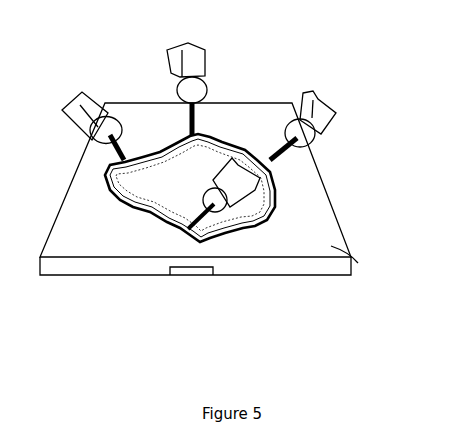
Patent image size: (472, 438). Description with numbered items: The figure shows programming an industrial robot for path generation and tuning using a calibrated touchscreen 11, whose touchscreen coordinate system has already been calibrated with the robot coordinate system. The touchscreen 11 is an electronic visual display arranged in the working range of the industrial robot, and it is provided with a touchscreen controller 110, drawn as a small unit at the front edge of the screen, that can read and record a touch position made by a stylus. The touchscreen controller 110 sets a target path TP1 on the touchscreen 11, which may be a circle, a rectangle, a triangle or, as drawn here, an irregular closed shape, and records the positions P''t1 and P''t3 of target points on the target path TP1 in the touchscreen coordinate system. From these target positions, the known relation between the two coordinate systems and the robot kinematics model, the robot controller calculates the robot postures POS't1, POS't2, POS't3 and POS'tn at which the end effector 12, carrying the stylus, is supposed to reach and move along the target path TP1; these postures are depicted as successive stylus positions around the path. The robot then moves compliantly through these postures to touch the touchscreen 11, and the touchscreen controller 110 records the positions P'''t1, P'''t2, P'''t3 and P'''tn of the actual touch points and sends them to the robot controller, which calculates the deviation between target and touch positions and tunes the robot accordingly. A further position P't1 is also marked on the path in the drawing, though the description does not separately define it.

The touchscreen 11 is at (358, 263).
The end effector 12 is at (198, 118).
The touchscreen controller 110 is at (175, 277).
The target path TP1 is at (118, 201).
The industrial robot posture POS't1 is at (77, 115).
The industrial robot posture POS't2 is at (199, 80).
The industrial robot posture POS't3 is at (313, 115).
The industrial robot posture POS'tn is at (259, 198).
The contact point at time t1 P't1 is at (154, 184).
The position of target point P''t1 is at (148, 241).
The position of touch point P'''t1 is at (95, 187).
The position of touch point P'''t2 is at (162, 121).
The position of touch point P'''t3 is at (249, 176).
The position of target point P''t3 is at (290, 201).
The position of touch point P'''tn is at (213, 254).